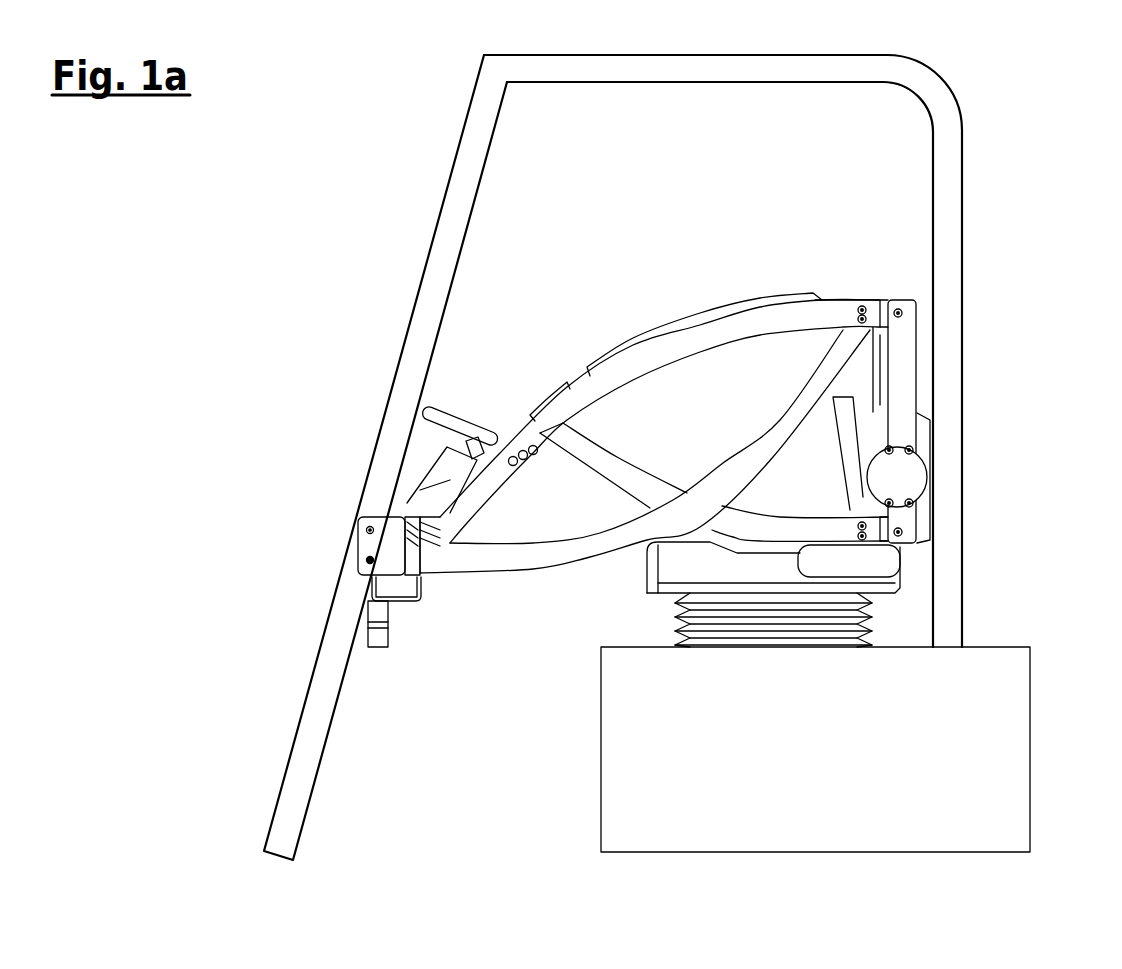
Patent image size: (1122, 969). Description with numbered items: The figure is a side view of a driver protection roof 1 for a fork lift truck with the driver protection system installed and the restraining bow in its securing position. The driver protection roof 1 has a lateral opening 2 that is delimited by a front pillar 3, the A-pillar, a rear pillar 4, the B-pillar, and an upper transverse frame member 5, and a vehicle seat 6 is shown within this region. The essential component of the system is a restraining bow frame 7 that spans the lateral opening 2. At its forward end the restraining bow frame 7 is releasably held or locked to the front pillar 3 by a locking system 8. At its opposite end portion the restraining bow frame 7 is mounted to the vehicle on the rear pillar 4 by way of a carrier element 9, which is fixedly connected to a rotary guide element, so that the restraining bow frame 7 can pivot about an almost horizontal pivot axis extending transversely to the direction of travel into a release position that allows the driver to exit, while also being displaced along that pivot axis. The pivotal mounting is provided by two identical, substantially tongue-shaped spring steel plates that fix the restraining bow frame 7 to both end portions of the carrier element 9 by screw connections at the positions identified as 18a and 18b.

The driver protection roof 1 is at (990, 137).
The lateral opening 2 is at (854, 166).
The front pillar 3 is at (434, 268).
The rear pillar 4 is at (948, 294).
The upper transverse frame member 5 is at (712, 73).
The vehicle seat 6 is at (663, 577).
The restraining bow frame 7 is at (741, 364).
The locking system 8 is at (406, 590).
The carrier element 9 is at (908, 478).
The spring element fixing position 18a is at (887, 280).
The spring element fixing position 18b is at (892, 560).